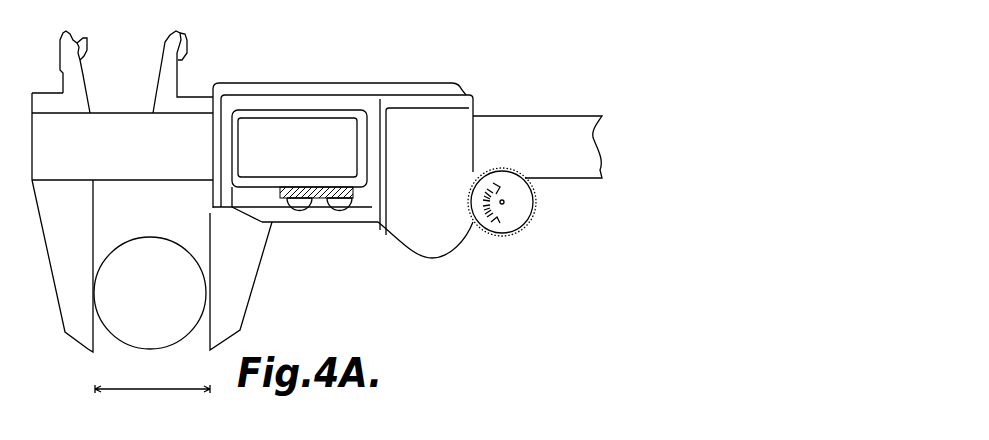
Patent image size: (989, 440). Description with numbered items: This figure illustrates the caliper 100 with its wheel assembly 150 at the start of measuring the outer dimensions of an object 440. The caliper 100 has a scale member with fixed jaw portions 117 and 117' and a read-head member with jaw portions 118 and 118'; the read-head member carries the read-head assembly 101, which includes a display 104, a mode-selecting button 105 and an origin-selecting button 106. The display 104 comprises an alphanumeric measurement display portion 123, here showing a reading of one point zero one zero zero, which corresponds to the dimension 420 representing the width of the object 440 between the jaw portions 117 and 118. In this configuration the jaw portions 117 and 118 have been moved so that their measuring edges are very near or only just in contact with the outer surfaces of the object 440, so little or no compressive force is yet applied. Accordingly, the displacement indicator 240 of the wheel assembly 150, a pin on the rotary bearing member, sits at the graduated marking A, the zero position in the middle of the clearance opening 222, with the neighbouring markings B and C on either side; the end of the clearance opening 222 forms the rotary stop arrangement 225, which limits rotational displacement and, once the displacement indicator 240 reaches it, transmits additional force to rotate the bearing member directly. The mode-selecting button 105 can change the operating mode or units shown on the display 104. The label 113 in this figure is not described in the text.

The caliper 100 is at (466, 40).
The read-head assembly 101 is at (248, 67).
The display 104 is at (233, 211).
The mode-selecting button 105 is at (299, 210).
The origin-selecting button 106 is at (340, 210).
The display 113 is at (345, 118).
The fixed jaw portion 117 is at (86, 266).
The fixed jaw portion 117' is at (98, 69).
The jaw portion 118 is at (257, 281).
The jaw portion 118' is at (193, 69).
The alphanumeric measurement display portion 123 is at (257, 152).
The wheel assembly 150 is at (538, 187).
The clearance opening 222 is at (498, 185).
The rotary stop arrangement 225 is at (488, 209).
The displacement indicator 240 is at (484, 203).
The dimension 420 is at (107, 393).
The object 440 is at (178, 338).
The graduated marking A is at (482, 202).
The point B is at (477, 228).
The point C is at (493, 230).